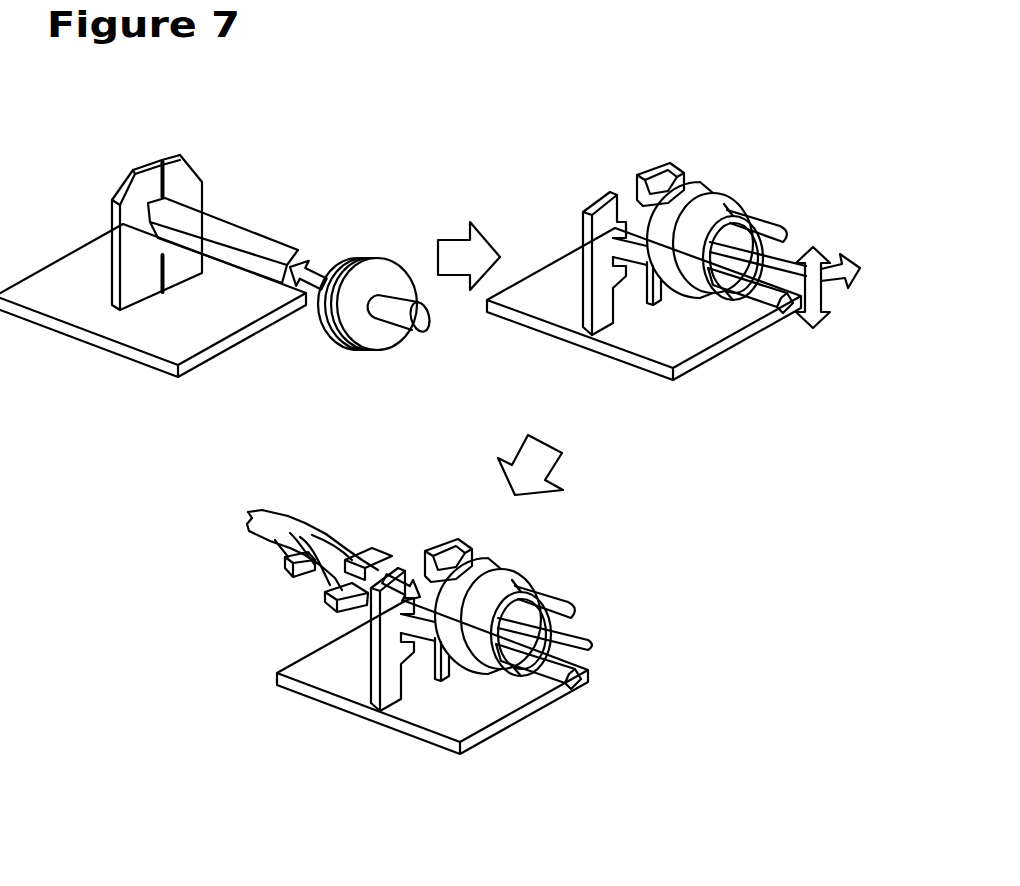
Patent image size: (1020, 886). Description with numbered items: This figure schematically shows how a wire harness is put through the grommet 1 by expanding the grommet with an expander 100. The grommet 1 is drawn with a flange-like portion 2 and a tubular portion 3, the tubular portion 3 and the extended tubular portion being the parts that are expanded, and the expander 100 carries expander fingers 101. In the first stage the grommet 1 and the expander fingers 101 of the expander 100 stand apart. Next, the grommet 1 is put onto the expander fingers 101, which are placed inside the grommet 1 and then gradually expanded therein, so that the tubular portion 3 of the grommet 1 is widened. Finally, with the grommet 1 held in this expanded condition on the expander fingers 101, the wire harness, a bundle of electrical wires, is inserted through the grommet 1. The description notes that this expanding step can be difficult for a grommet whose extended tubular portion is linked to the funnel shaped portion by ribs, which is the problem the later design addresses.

The grommet 1 is at (322, 349).
The connector flange ring (housing front part) 2 is at (387, 260).
The tubular portion 3 is at (400, 322).
The expander 100 is at (101, 338).
The expander fingers 101 is at (284, 241).